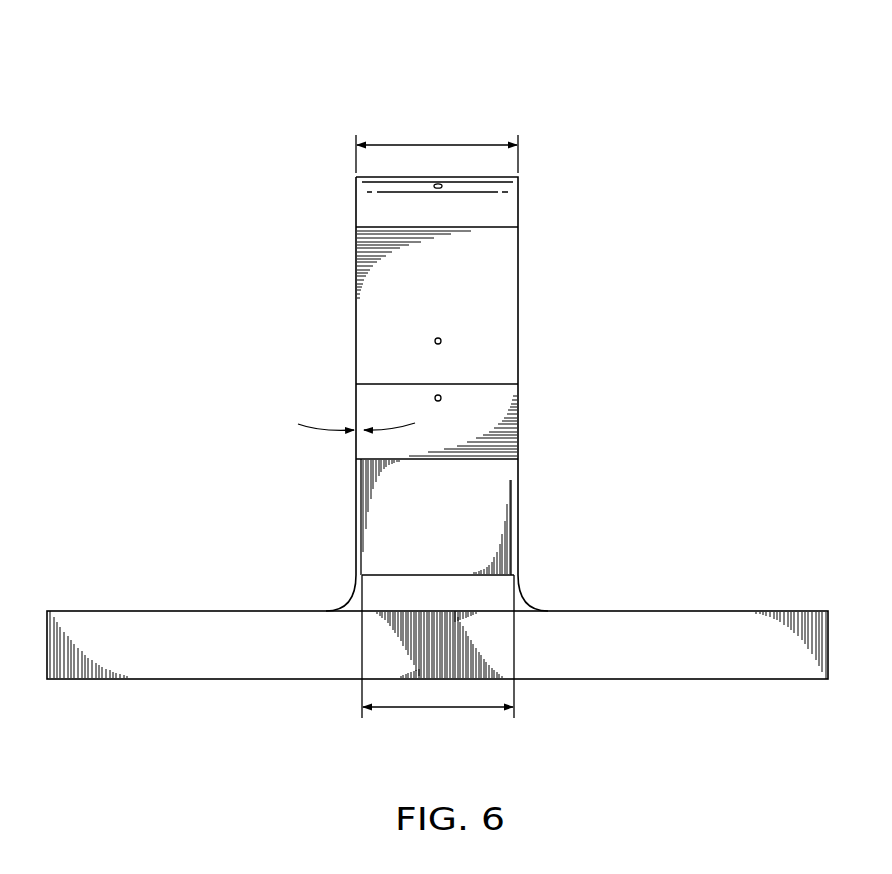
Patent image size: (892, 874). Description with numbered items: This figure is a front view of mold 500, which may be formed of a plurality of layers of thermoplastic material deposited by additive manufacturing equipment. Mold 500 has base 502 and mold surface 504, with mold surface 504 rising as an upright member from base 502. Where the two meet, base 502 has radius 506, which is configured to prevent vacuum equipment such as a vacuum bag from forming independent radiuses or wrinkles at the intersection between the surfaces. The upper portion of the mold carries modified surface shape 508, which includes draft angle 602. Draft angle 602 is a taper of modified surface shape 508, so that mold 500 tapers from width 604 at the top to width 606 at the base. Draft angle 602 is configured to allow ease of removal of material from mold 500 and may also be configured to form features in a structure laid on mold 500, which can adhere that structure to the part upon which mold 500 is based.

The mold 500 is at (317, 65).
The base 502 is at (690, 611).
The mold surface 504 is at (518, 330).
The radius 506 is at (540, 588).
The modified surface shape 508 is at (338, 207).
The draft angle 602 is at (312, 425).
The width 604 is at (437, 145).
The width 606 is at (437, 712).